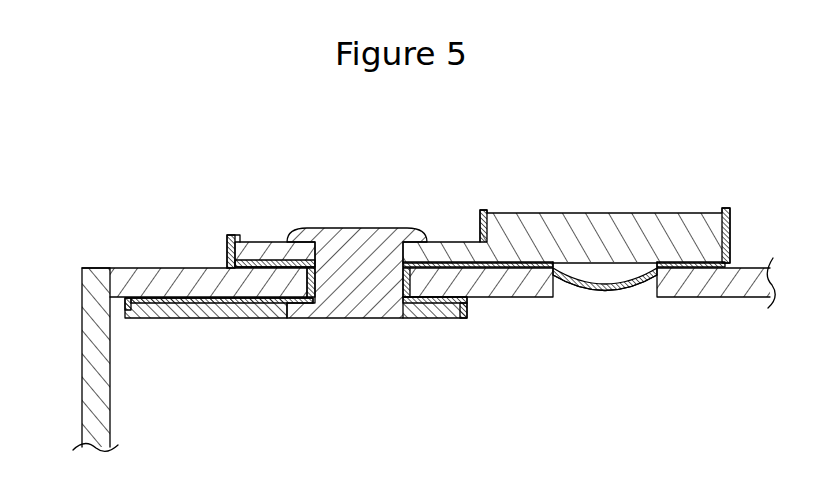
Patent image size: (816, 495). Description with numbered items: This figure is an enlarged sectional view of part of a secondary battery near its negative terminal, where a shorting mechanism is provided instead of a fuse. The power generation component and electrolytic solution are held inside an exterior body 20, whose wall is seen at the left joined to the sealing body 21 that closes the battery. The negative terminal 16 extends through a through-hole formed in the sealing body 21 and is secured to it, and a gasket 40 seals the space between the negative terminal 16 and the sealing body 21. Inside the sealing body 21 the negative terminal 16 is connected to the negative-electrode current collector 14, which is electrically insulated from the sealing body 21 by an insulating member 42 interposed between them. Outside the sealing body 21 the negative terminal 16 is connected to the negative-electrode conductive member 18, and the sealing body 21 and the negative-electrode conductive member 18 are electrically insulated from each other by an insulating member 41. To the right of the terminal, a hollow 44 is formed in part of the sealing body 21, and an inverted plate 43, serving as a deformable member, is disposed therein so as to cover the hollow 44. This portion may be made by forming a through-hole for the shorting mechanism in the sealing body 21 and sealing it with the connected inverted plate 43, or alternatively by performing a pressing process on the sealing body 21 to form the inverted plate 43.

The negative-electrode current collector 14 is at (225, 318).
The negative terminal 16 is at (363, 228).
The negative-electrode conductive member 18 is at (600, 212).
The exterior body 20 is at (82, 355).
The sealing body 21 is at (170, 266).
The gasket 40 is at (435, 283).
The insulating member 41 is at (267, 262).
The insulating member 42 is at (155, 318).
The inverted plate 43 is at (597, 297).
The hollow 44 is at (641, 289).